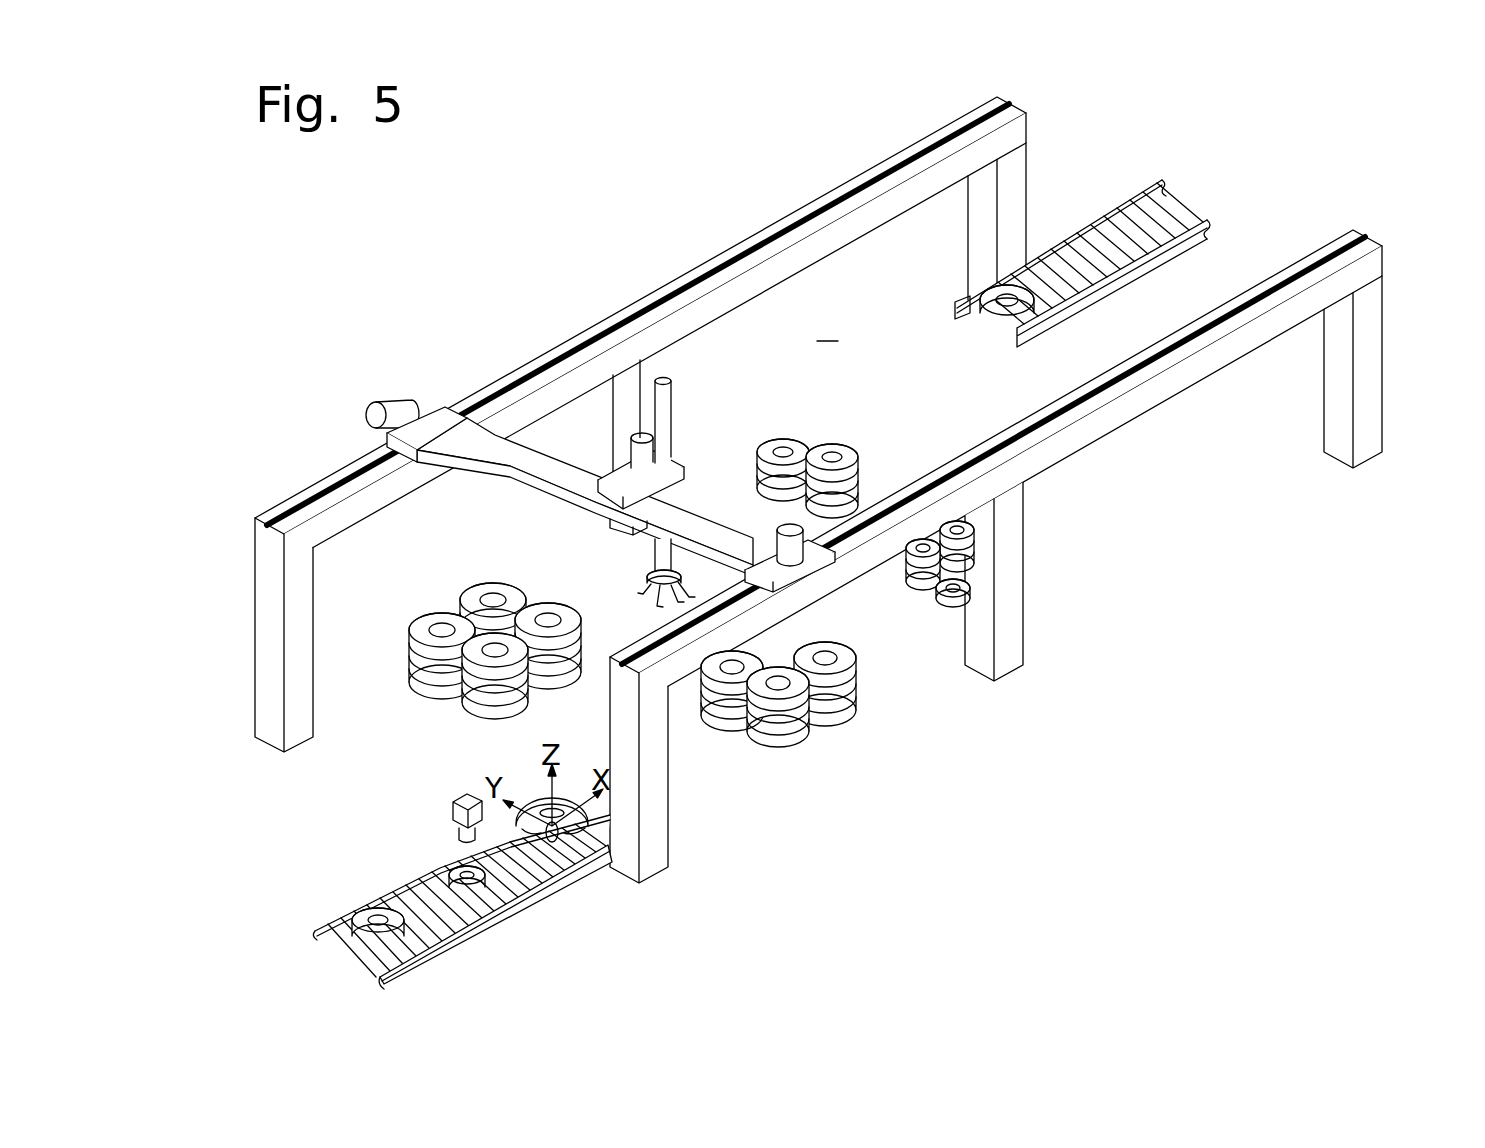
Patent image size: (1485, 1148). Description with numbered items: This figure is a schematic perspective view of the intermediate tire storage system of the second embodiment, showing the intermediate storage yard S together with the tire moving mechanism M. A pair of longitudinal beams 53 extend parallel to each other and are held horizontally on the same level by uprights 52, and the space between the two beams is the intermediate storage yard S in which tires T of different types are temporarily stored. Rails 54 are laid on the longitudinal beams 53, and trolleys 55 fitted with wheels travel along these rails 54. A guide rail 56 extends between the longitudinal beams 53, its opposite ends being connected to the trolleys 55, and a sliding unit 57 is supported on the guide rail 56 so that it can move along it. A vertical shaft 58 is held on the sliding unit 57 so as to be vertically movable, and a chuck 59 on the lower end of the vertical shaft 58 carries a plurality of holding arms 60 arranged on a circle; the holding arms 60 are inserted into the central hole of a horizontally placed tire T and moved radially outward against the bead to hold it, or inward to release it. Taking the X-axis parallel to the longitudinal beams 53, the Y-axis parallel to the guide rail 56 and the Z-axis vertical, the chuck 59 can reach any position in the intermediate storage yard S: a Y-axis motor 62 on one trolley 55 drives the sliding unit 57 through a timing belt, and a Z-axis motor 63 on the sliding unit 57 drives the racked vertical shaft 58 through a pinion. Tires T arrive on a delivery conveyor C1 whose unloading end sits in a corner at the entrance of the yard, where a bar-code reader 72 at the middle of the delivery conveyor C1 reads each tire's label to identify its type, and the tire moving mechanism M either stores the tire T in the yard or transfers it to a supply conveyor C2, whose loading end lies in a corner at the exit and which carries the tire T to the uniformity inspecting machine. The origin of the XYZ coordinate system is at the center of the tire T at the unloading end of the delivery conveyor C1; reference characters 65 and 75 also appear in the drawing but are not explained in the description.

The uprights 52 is at (262, 635).
The longitudinal beams 53 is at (645, 297).
The rails 54 is at (801, 223).
The trolleys 55 is at (433, 417).
The guide rail 56 is at (690, 518).
The sliding unit 57 is at (614, 478).
The vertical shaft 58 is at (665, 421).
The chuck 59 is at (647, 575).
The holding arms 60 is at (640, 617).
The Y-axis motor 62 is at (778, 548).
The Z-axis motor 63 is at (645, 455).
The X-axis drive motor 65 is at (381, 402).
The bar-code reader 72 is at (452, 812).
The floor / stock area 75 is at (900, 355).
The tire moving mechanism M is at (720, 236).
The intermediate storage yard S is at (827, 325).
The tire T is at (976, 300).
The delivery conveyor C1 is at (493, 905).
The supply conveyor C2 is at (1116, 205).